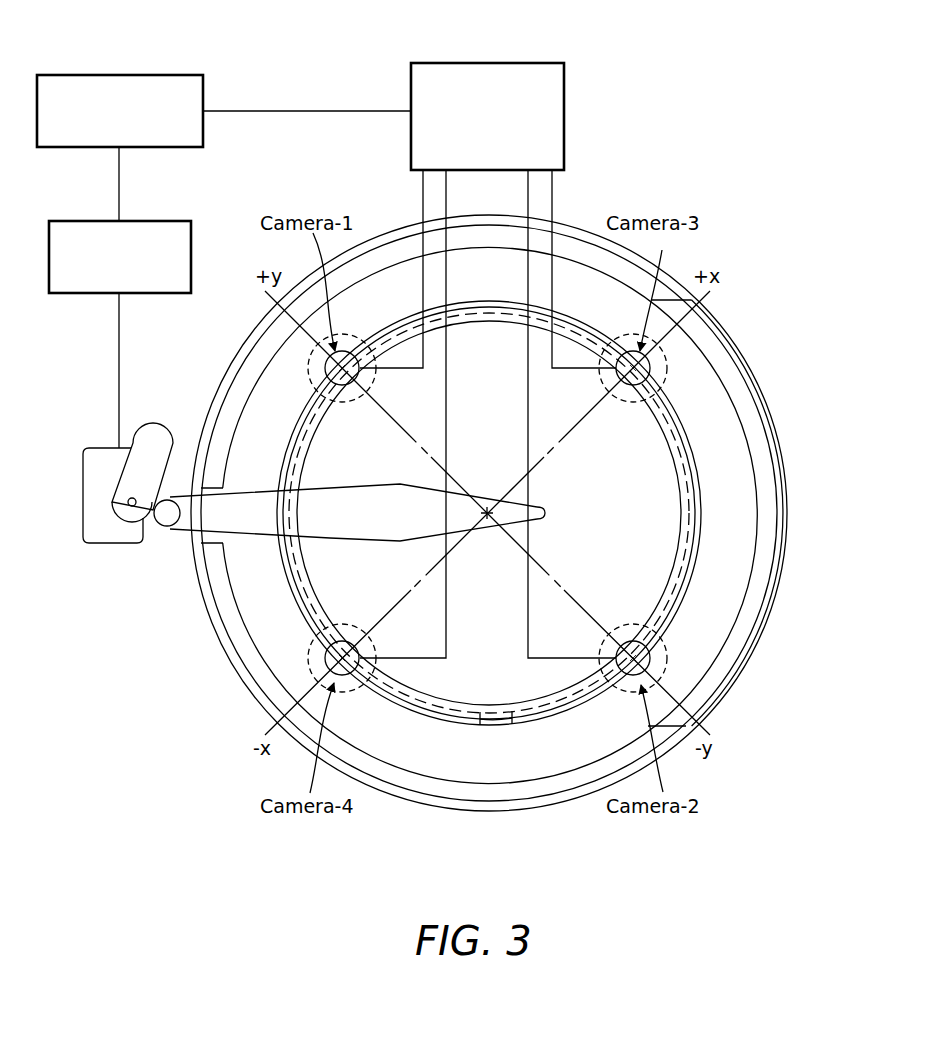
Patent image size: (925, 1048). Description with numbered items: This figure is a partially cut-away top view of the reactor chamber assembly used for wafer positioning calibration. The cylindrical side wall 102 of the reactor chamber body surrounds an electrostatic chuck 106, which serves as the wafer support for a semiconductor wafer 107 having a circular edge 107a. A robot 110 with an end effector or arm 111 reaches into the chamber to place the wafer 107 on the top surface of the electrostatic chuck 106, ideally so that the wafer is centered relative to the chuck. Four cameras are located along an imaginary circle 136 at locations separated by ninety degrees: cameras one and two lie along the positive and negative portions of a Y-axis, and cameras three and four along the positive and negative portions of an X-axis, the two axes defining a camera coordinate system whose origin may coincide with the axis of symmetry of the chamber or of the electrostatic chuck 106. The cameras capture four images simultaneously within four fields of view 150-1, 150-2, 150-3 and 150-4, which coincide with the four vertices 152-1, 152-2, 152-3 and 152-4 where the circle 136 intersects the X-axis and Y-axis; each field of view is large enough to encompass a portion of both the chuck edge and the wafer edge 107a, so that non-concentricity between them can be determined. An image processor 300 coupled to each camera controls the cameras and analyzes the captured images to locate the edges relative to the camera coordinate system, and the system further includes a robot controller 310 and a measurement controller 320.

The measurement controller 320 is at (57, 90).
The robot controller 310 is at (72, 238).
The image processor 300 is at (433, 78).
The robot 110 is at (104, 455).
The end effector or arm 111 is at (541, 506).
The cylindrical side wall 102 is at (217, 593).
The electrostatic chuck 106 is at (433, 705).
The semiconductor wafer 107 is at (460, 726).
The circular edge of the wafer 107a is at (480, 725).
The imaginary circle 136 is at (480, 717).
The field of view of camera 1 150-1 is at (308, 353).
The field of view of camera 2 150-2 is at (667, 675).
The field of view of camera 3 150-3 is at (668, 352).
The field of view of camera 4 150-4 is at (310, 675).
The vertex 152-1 is at (342, 386).
The vertex 152-2 is at (634, 640).
The vertex 152-3 is at (634, 386).
The vertex 152-4 is at (342, 640).